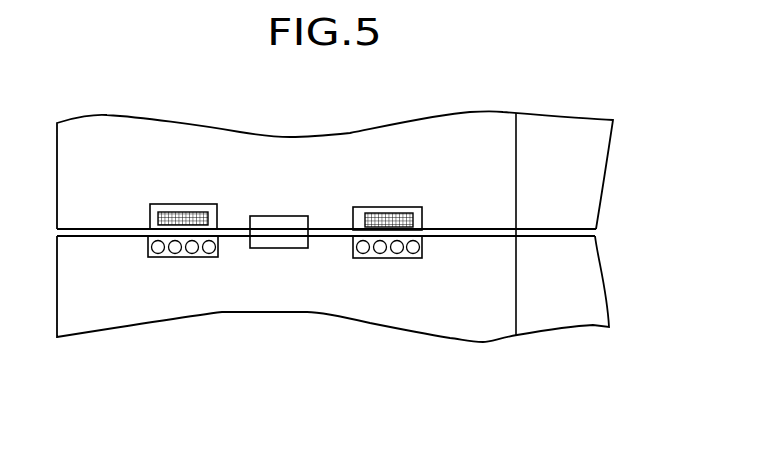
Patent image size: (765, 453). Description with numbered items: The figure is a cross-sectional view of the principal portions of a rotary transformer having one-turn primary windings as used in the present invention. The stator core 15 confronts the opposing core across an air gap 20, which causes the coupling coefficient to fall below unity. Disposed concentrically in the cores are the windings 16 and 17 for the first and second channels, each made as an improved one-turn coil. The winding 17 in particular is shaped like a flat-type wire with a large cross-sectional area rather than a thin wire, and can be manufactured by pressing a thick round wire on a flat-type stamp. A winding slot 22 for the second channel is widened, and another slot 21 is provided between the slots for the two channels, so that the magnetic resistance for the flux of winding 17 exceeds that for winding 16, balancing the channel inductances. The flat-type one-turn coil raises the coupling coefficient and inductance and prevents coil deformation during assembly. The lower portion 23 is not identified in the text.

The stator core 15 is at (478, 118).
The winding 16 is at (400, 212).
The winding 17 is at (190, 208).
The air gap 20 is at (596, 232).
The slot 21 is at (398, 254).
The winding slot 22 is at (177, 255).
The lower core half 23 is at (490, 332).